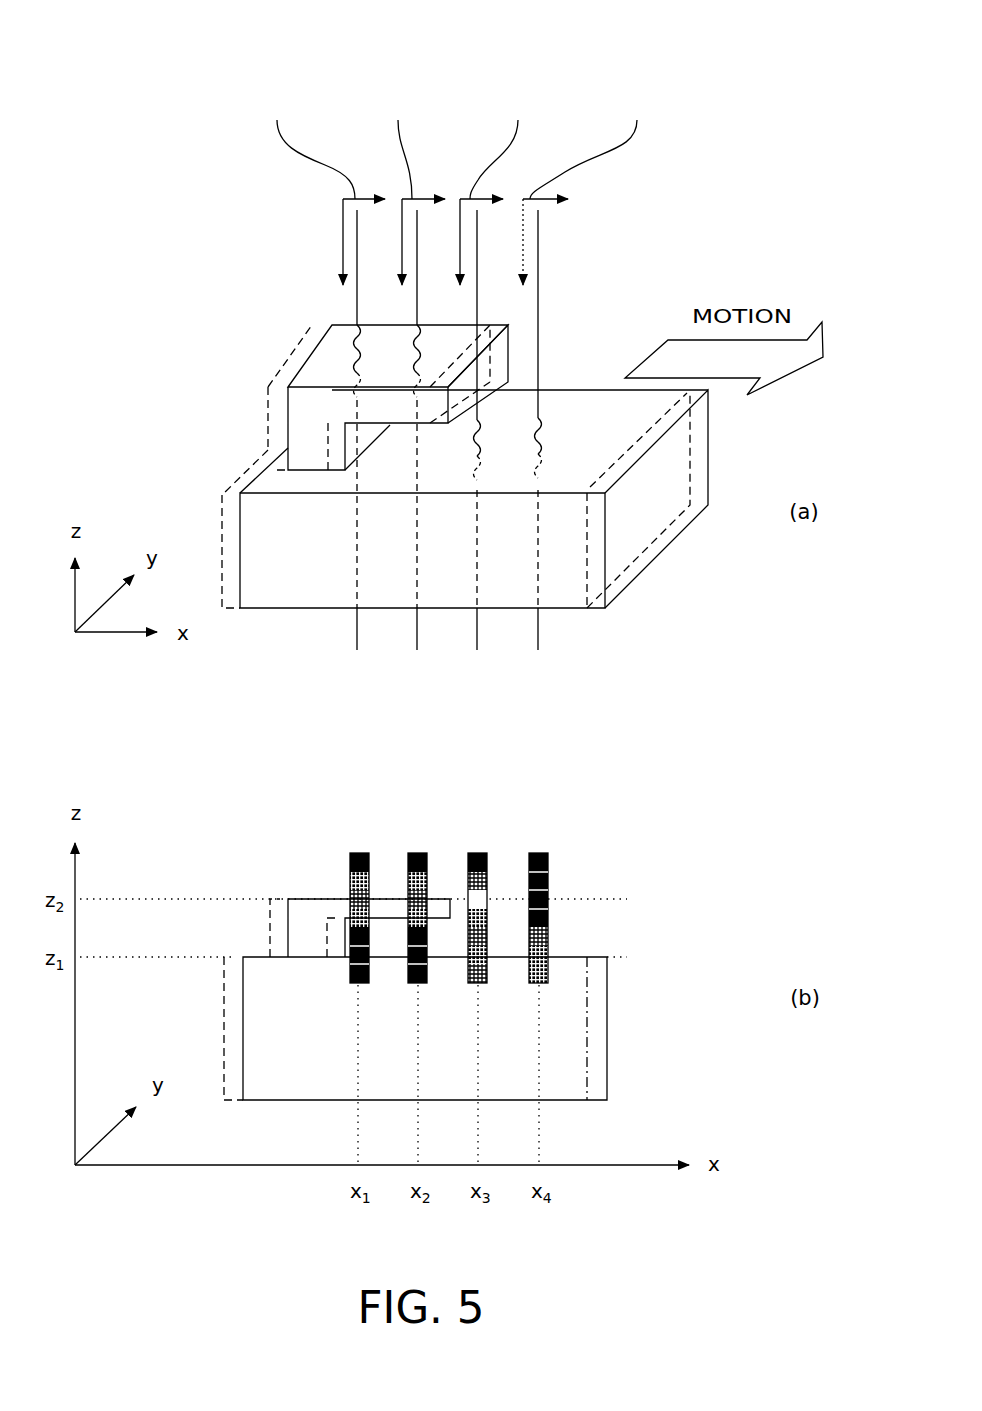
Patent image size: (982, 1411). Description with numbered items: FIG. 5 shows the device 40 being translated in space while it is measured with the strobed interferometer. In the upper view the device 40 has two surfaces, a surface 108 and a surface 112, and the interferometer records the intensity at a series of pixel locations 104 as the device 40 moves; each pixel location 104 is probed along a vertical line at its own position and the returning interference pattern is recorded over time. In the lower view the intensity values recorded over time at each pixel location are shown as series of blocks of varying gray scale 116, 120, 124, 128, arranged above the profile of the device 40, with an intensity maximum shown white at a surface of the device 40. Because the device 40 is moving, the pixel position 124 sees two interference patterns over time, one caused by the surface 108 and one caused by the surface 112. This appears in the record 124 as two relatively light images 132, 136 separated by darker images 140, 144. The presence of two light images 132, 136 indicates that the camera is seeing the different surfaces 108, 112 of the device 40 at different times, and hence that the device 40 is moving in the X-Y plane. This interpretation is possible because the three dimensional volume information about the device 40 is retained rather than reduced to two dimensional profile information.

The pixels 104 is at (688, 45).
The surface 112 is at (317, 345).
The surface 108 is at (563, 407).
The device 40 is at (735, 480).
The intensity values over time 116 is at (356, 852).
The intensity values over time 120 is at (413, 852).
The intensity values over time 124 is at (475, 852).
The intensity values over time 128 is at (535, 852).
The light image 136 is at (488, 882).
The dark image 144 is at (468, 921).
The dark image 140 is at (468, 938).
The light image 132 is at (487, 960).